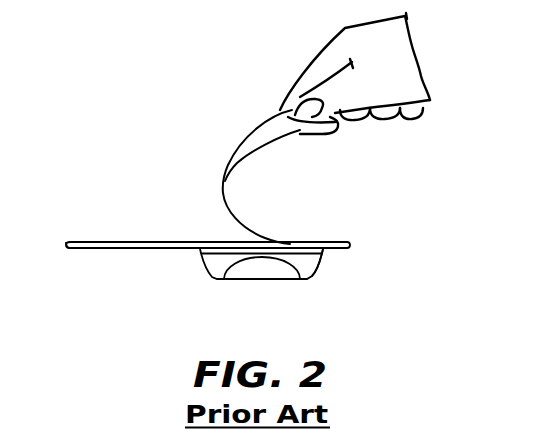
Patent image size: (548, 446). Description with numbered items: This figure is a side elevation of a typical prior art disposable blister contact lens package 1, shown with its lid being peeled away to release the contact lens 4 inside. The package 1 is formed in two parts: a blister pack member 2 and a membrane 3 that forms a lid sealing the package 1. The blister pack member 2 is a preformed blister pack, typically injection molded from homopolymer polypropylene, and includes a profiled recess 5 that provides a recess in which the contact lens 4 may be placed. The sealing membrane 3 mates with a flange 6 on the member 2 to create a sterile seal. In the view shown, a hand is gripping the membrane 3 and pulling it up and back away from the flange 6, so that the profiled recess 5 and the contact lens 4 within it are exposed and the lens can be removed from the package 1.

The disposable blister contact lens package 1 is at (128, 267).
The blister pack member 2 is at (214, 277).
The membrane 3 is at (228, 164).
The contact lens 4 is at (242, 272).
The profiled recess 5 is at (312, 276).
The flange 6 is at (64, 248).